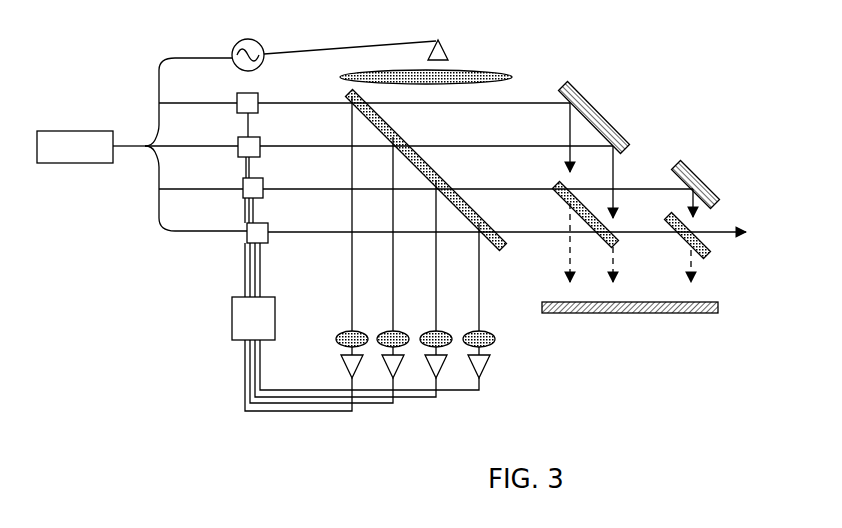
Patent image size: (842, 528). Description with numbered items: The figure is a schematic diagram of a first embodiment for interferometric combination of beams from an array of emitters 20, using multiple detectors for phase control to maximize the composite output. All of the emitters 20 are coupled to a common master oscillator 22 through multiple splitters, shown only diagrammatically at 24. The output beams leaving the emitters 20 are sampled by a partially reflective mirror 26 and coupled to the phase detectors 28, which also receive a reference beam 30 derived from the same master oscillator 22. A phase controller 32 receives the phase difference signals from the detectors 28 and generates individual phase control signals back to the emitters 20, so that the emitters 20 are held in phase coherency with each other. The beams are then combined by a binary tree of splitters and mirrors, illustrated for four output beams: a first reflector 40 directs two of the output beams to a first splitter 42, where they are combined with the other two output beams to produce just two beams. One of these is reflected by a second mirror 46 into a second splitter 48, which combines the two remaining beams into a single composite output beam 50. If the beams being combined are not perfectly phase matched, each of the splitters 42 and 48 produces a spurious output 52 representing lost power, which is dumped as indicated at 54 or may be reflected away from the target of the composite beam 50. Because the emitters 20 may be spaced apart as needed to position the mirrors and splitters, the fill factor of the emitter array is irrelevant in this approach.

The emitters 20 is at (238, 95).
The master oscillator 22 is at (58, 165).
The splitters 24 is at (135, 165).
The partially reflective mirror 26 is at (390, 125).
The phase detectors 28 is at (495, 362).
The reference beam 30 is at (350, 43).
The phase controller 32 is at (277, 313).
The first reflector 40 is at (593, 103).
The first splitter 42 is at (618, 243).
The second mirror 46 is at (700, 178).
The second splitter 48 is at (710, 263).
The composite output beam 50 is at (730, 230).
The spurious output 52 is at (567, 253).
The beam dump 54 is at (718, 312).